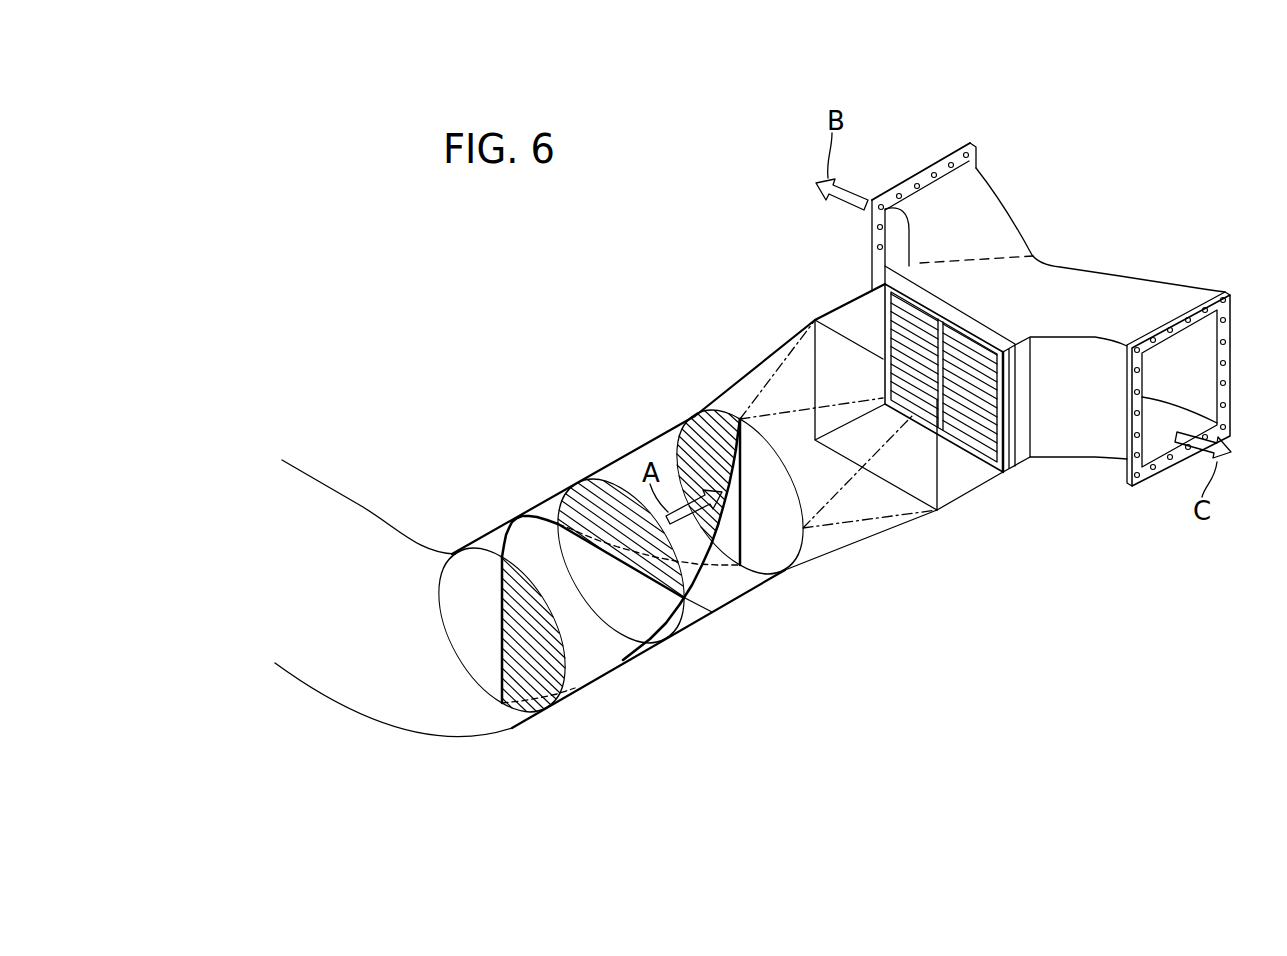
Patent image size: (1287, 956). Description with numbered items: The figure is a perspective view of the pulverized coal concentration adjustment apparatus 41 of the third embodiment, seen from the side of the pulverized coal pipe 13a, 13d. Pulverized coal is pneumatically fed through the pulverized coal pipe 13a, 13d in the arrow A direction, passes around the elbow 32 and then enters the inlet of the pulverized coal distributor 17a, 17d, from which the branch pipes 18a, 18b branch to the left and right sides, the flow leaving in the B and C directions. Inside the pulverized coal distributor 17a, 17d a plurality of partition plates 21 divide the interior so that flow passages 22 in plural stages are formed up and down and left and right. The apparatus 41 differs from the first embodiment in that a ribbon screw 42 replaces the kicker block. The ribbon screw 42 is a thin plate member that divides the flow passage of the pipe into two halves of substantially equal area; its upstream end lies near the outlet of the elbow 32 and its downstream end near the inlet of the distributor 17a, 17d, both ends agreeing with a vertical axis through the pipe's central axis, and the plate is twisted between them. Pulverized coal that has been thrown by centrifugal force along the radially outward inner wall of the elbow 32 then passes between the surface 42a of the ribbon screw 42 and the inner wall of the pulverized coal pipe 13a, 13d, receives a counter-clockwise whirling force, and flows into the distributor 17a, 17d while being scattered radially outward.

The pulverized coal pipe 13a is at (656, 512).
The pulverized coal pipe 13d is at (365, 507).
The pulverized coal distributor 17a is at (1007, 285).
The pulverized coal distributor 17d is at (1007, 285).
The branch pipe 18a is at (1002, 201).
The branch pipe 18b is at (1137, 286).
The partition plates 21 is at (905, 336).
The flow passages 22 is at (915, 320).
The elbow 32 is at (455, 742).
The pulverized coal concentration adjustment apparatus 41 is at (702, 335).
The ribbon screw 42 is at (503, 555).
The surface of ribbon screw 42a is at (603, 660).